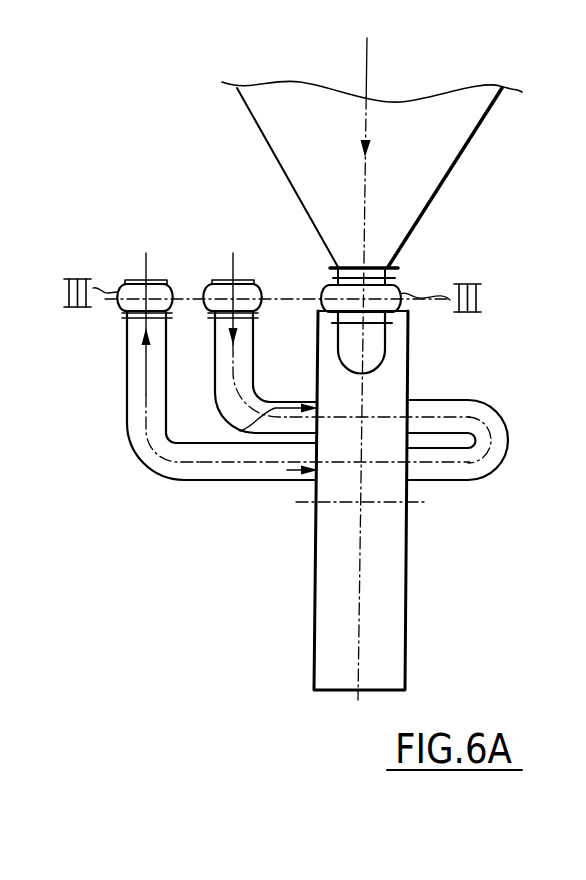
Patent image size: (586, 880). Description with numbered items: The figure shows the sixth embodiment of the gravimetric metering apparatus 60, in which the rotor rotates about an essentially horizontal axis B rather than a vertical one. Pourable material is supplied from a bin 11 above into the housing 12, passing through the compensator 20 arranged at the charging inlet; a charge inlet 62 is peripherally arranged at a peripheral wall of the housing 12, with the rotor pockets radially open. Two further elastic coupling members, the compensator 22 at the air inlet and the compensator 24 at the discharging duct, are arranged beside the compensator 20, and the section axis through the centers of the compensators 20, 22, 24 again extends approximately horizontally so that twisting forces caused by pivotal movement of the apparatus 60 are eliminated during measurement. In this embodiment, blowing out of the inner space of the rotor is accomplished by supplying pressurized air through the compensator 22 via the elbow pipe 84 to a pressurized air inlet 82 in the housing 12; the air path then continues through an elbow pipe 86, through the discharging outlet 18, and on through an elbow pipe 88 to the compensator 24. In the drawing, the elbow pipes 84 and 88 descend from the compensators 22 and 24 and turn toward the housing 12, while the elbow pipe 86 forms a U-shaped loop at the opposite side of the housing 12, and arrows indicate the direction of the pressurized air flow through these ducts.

The metering apparatus 60 is at (152, 233).
The bin 11 is at (252, 120).
The compensator 20 is at (400, 289).
The compensator 24 is at (128, 292).
The compensator 22 is at (222, 292).
The elbow pipe 88 is at (197, 478).
The discharging outlet 18 is at (288, 474).
The elbow pipe 84 is at (253, 369).
The pressurized air inlet 82 is at (232, 431).
The housing 12 is at (405, 597).
The charge inlet 62 is at (375, 360).
The elbow pipe 86 is at (497, 420).
The horizontal axis B is at (405, 503).